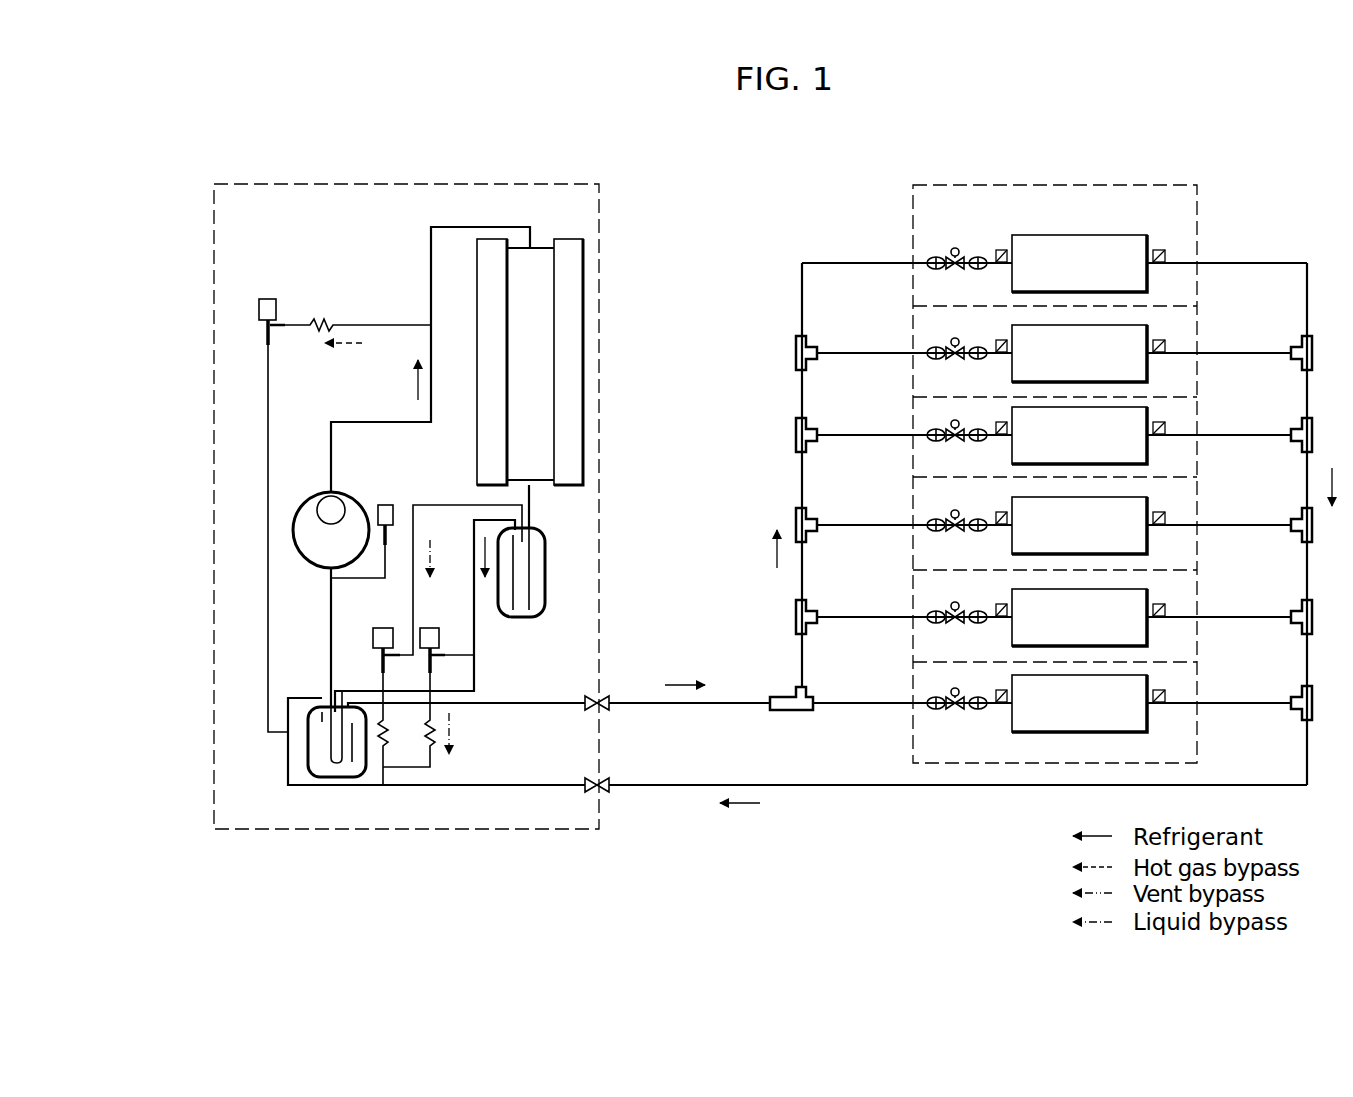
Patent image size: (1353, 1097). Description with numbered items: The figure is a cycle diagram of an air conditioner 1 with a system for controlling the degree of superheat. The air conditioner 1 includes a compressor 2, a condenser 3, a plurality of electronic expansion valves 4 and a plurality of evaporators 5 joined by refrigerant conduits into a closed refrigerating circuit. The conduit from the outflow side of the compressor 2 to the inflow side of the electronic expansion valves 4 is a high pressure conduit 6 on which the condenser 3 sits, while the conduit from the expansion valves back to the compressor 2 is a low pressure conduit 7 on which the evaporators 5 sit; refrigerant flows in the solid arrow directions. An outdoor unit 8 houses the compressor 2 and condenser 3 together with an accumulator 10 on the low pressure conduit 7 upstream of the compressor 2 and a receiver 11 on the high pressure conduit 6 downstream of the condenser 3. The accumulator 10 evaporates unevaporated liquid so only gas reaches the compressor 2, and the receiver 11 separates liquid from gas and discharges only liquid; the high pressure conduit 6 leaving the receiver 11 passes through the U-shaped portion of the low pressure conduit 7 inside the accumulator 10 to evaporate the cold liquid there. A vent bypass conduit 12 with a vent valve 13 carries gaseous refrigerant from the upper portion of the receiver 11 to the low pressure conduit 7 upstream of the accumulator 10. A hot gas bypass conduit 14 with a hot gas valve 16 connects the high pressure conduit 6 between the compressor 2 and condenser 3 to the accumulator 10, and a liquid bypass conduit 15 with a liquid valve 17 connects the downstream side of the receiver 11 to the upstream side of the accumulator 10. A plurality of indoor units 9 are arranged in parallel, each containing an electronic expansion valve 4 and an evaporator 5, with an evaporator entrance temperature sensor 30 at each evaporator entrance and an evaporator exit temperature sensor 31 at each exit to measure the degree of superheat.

The air conditioner 1 is at (745, 199).
The compressor 2 is at (293, 530).
The condenser 3 is at (585, 293).
The electronic expansion valve 4 is at (950, 261).
The evaporator 5 is at (1100, 234).
The high pressure conduit 6 is at (491, 227).
The low pressure conduit 7 is at (490, 786).
The outdoor unit 8 is at (600, 223).
The indoor unit 9 is at (940, 185).
The accumulator 10 is at (314, 777).
The receiver 11 is at (545, 572).
The vent bypass conduit 12 is at (413, 600).
The vent valve 13 is at (373, 638).
The hot gas bypass conduit 14 is at (268, 393).
The liquid bypass conduit 15 is at (462, 655).
The hot gas valve 16 is at (259, 309).
The liquid valve 17 is at (439, 636).
The evaporator entrance temperature sensor 30 is at (1001, 250).
The evaporator exit temperature sensor 31 is at (1160, 250).